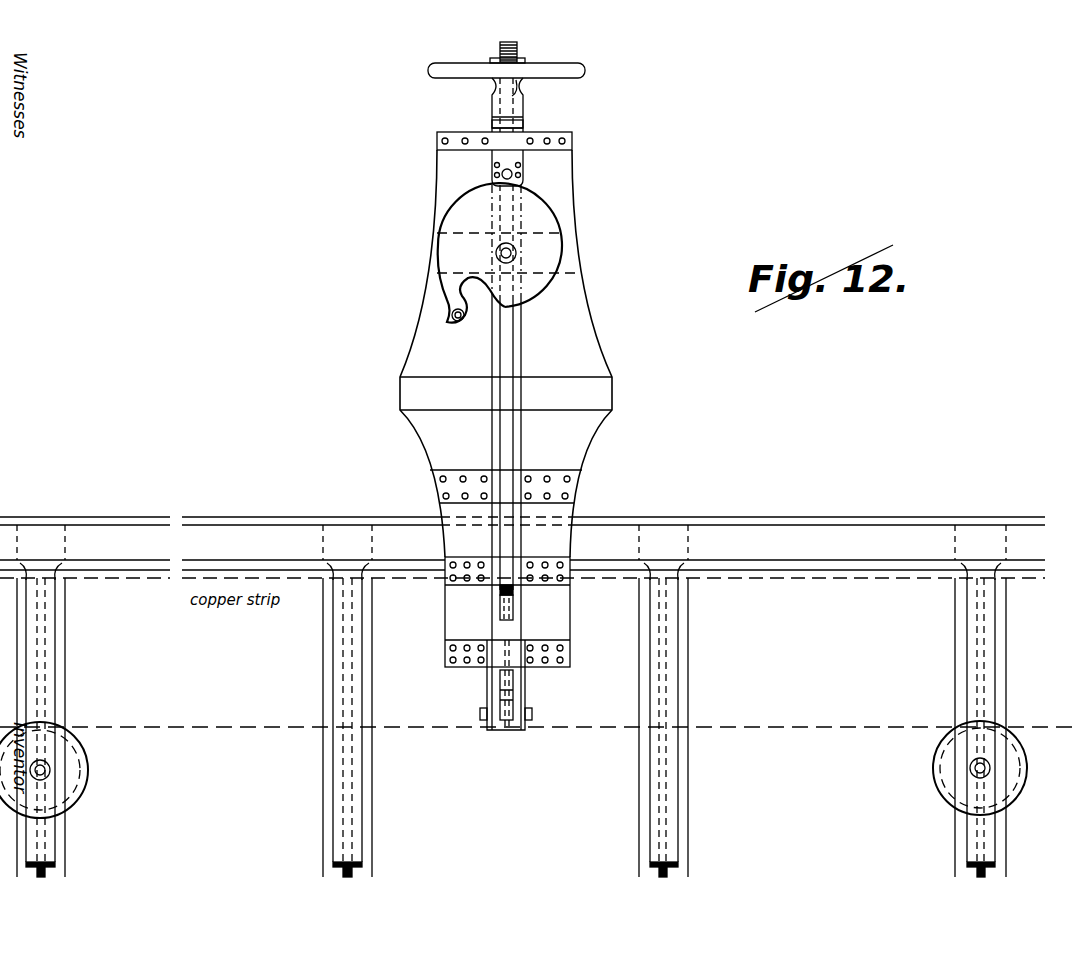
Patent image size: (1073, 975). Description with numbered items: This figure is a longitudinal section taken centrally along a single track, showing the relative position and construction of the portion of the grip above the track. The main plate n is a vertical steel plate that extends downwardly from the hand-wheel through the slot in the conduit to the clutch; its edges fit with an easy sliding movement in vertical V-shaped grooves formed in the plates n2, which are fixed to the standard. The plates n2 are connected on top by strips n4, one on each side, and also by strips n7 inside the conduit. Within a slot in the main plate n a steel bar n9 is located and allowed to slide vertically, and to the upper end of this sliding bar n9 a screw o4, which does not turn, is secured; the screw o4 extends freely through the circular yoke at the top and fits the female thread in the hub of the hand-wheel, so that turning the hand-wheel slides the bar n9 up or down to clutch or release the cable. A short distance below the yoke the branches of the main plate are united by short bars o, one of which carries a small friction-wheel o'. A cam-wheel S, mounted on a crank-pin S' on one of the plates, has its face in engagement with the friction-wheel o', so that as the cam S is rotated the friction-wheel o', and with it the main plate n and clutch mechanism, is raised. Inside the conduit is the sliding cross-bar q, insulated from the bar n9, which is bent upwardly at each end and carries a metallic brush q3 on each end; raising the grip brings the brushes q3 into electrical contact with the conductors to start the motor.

The plate n2 is at (605, 340).
The strips n4 is at (518, 145).
The main plate n is at (520, 124).
The steel bar n9 is at (492, 126).
The screw o4 is at (520, 95).
The short bars o is at (484, 145).
The friction-wheel o' is at (527, 173).
The cam-wheel S is at (468, 252).
The cam shaft S' is at (566, 242).
The strips n7 is at (572, 565).
The sliding bar q is at (497, 597).
The metallic brush q3 is at (514, 592).